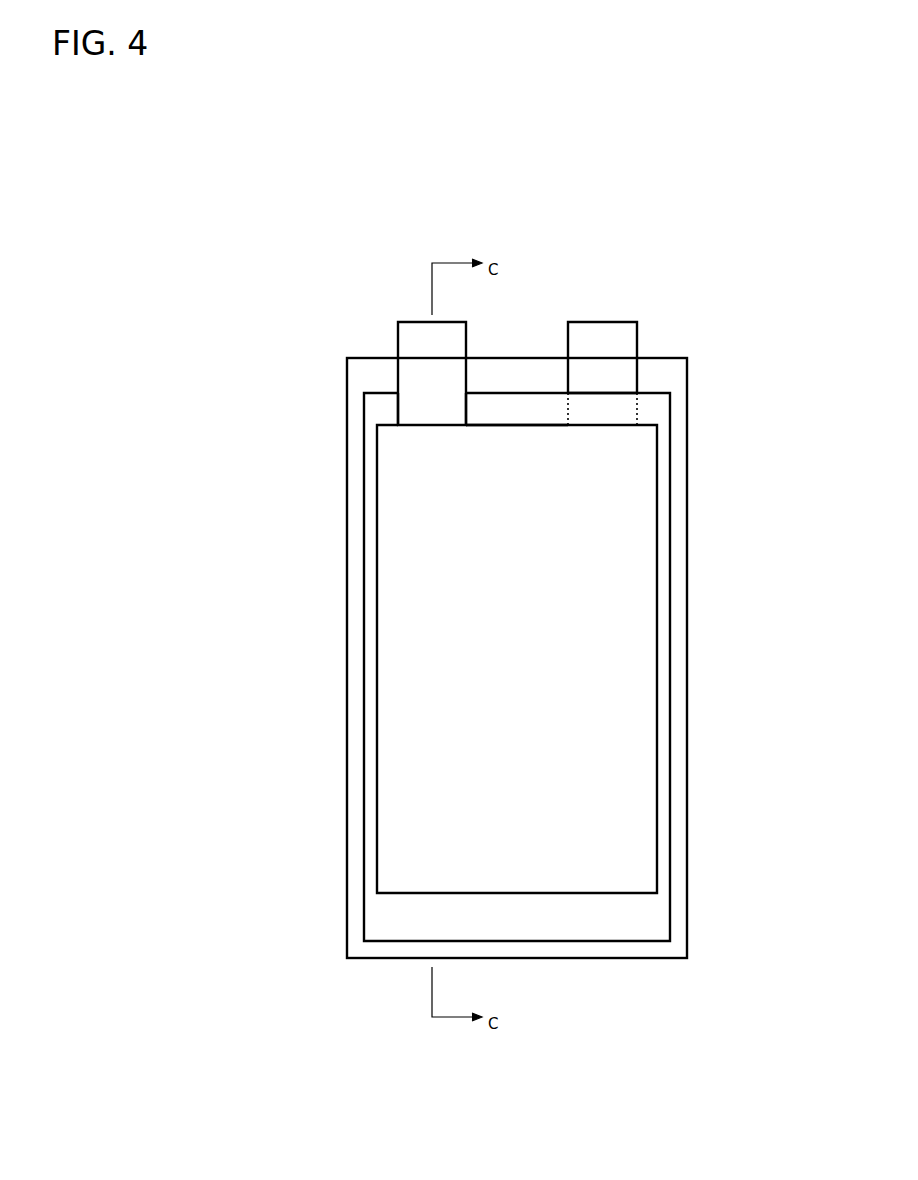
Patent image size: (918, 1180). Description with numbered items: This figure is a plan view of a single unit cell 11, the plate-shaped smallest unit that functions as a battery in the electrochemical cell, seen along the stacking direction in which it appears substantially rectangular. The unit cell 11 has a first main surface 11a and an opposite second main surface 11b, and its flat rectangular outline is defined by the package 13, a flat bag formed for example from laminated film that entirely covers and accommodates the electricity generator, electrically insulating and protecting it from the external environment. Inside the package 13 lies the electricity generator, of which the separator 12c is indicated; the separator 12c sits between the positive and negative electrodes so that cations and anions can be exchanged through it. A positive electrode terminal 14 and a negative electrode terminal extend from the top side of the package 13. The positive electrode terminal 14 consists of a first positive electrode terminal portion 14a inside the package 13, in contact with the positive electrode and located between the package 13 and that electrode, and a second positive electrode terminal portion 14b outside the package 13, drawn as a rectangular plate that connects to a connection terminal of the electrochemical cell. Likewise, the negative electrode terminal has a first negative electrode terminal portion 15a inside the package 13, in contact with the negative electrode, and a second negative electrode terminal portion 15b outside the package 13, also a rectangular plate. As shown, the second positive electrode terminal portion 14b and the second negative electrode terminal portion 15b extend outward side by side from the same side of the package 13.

The unit cell 11 is at (657, 241).
The first main surface 11a is at (607, 611).
The second main surface 11b is at (603, 686).
The separator 12c is at (502, 411).
The package 13 is at (682, 360).
The positive electrode terminal 14 is at (343, 373).
The first positive electrode terminal portion 14a is at (438, 436).
The second positive electrode terminal portion 14b is at (428, 345).
The first negative electrode terminal portion 15a is at (655, 401).
The second negative electrode terminal portion 15b is at (613, 345).